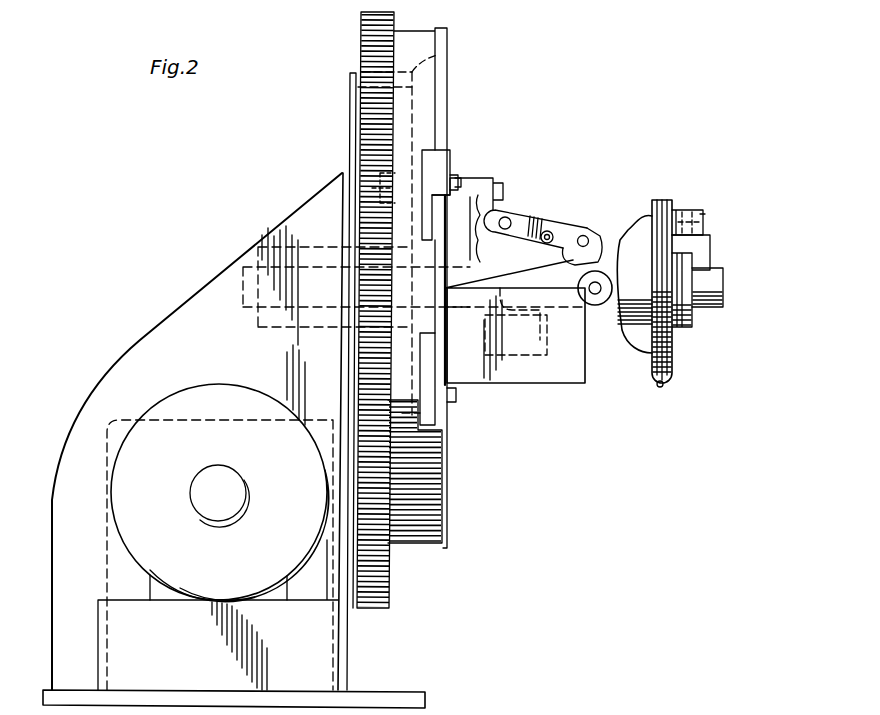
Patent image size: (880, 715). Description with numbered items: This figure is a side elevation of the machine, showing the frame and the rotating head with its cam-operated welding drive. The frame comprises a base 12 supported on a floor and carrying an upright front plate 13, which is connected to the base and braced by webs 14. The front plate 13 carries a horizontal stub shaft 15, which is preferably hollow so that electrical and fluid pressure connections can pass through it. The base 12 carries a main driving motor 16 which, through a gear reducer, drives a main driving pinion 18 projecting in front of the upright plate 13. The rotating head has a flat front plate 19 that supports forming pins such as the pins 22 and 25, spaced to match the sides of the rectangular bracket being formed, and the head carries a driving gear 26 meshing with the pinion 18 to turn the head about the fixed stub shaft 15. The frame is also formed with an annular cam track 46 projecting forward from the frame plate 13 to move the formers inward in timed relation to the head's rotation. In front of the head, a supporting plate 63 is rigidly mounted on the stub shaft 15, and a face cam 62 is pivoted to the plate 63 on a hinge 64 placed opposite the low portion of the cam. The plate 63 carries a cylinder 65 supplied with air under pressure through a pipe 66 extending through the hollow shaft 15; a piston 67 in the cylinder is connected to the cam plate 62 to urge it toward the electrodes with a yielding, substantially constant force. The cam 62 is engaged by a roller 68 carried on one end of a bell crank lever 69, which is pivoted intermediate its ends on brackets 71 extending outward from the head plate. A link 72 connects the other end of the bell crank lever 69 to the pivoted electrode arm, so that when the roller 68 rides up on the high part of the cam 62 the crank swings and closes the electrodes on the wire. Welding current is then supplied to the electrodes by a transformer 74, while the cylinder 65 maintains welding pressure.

The base 12 is at (365, 697).
The upright front plate 13 is at (350, 118).
The webs 14 is at (186, 338).
The stub shaft 15 is at (723, 292).
The main driving motor 16 is at (222, 397).
The main driving pinion 18 is at (372, 606).
The front plate 19 is at (448, 85).
The forming pin 22 is at (459, 180).
The forming pin 25 is at (457, 398).
The driving gear 26 is at (360, 22).
The annular cam track 46 is at (438, 54).
The face cam 62 is at (636, 230).
The supporting plate 63 is at (672, 355).
The hinge 64 is at (660, 388).
The cylinder 65 is at (692, 210).
The pipe 66 is at (712, 252).
The piston 67 is at (705, 214).
The roller 68 is at (596, 308).
The bell crank lever 69 is at (590, 237).
The brackets 71 is at (547, 218).
The link 72 is at (515, 222).
The transformer 74 is at (513, 360).